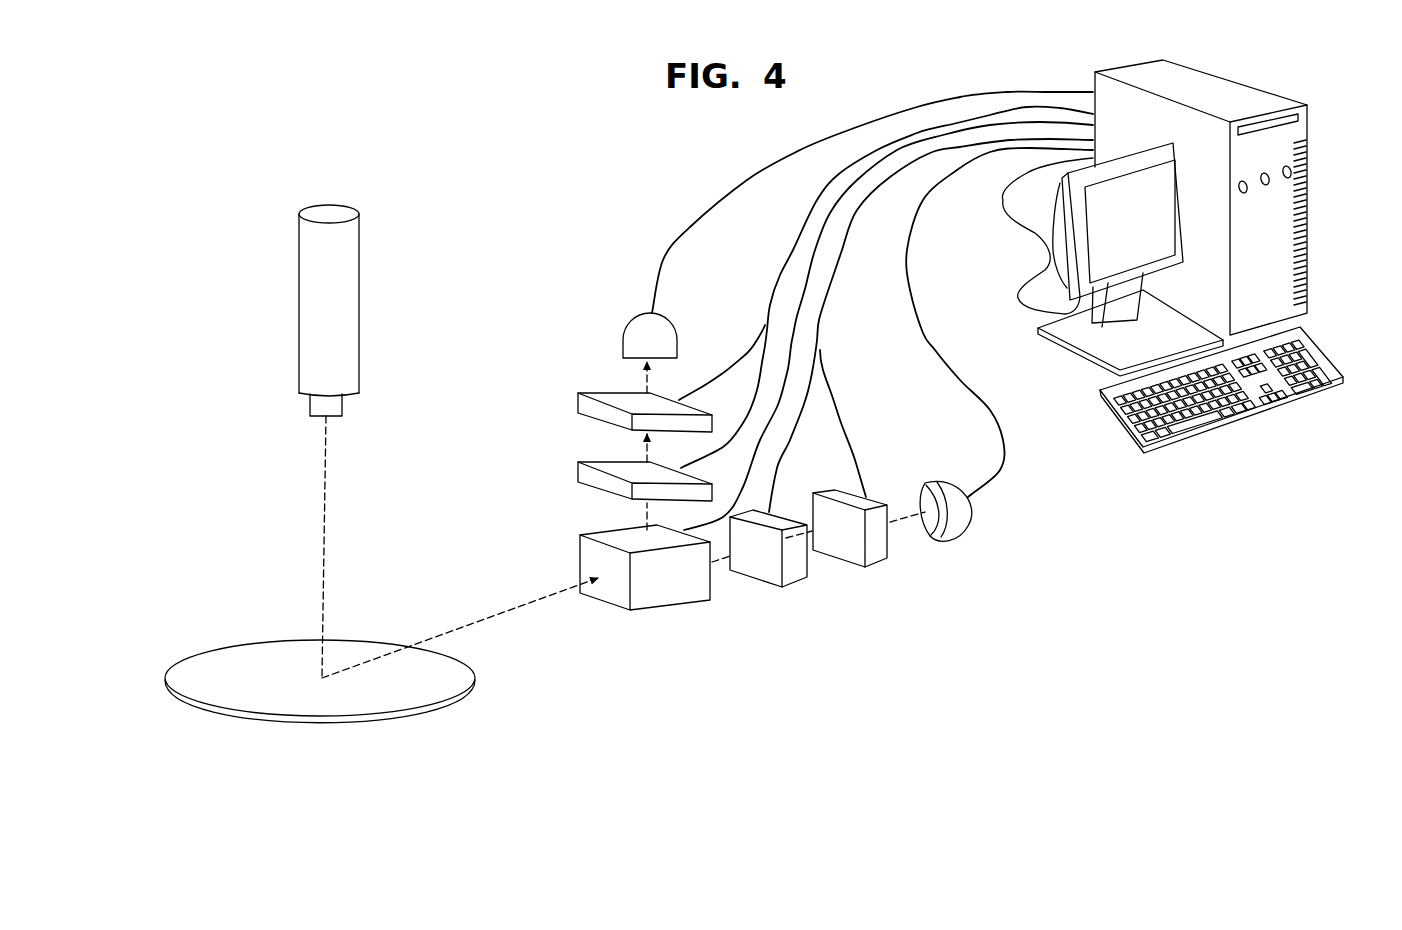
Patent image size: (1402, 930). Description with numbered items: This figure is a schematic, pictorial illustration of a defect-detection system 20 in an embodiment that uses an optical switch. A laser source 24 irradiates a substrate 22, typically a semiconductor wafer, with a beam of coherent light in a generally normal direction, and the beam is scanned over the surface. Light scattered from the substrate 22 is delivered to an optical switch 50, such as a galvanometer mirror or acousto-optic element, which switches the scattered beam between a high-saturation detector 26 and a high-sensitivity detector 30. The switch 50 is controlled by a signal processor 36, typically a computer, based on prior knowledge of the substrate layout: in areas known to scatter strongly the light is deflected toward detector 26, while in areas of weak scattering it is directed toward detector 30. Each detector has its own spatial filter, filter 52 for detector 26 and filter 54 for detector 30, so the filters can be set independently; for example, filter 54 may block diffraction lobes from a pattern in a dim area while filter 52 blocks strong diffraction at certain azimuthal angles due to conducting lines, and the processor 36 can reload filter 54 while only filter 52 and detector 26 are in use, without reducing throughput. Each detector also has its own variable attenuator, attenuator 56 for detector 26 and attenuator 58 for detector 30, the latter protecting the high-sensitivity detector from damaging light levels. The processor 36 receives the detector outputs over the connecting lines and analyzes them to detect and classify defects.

The system 20 is at (410, 112).
The substrate 22 is at (438, 697).
The laser source 24 is at (348, 287).
The high-saturation detector 26 is at (630, 339).
The high-sensitivity detector 30 is at (931, 482).
The signal processor 36 is at (1308, 194).
The optical switch 50 is at (582, 553).
The spatial filter 52 is at (578, 400).
The spatial filter 54 is at (828, 492).
The variable attenuator 56 is at (578, 468).
The variable attenuator 58 is at (752, 571).